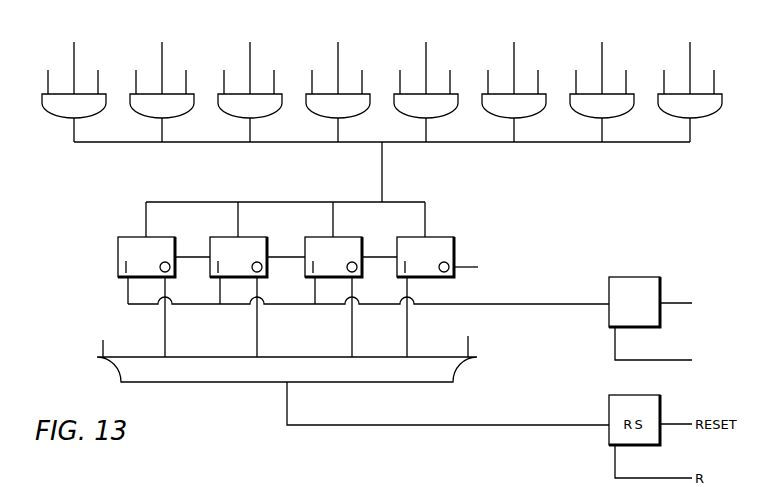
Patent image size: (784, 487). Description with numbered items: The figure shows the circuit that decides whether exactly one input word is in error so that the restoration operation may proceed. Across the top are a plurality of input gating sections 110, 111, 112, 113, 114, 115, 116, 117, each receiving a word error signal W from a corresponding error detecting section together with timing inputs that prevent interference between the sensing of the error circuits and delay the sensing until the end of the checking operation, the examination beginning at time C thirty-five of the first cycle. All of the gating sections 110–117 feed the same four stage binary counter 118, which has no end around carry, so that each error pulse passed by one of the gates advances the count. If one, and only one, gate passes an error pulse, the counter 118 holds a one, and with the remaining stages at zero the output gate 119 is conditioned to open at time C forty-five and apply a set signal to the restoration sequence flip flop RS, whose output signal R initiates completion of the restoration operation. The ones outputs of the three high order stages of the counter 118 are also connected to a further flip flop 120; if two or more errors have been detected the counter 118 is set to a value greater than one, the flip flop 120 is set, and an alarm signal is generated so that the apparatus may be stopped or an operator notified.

The input gating section 110 is at (55, 108).
The input gating section 111 is at (143, 108).
The input gating section 112 is at (231, 108).
The input gating section 113 is at (319, 108).
The input gating section 114 is at (407, 108).
The input gating section 115 is at (495, 108).
The input gating section 116 is at (583, 108).
The input gating section 117 is at (671, 108).
The four stage binary counter 118 is at (468, 250).
The output gate 119 is at (478, 362).
The flip flop 120 is at (628, 277).